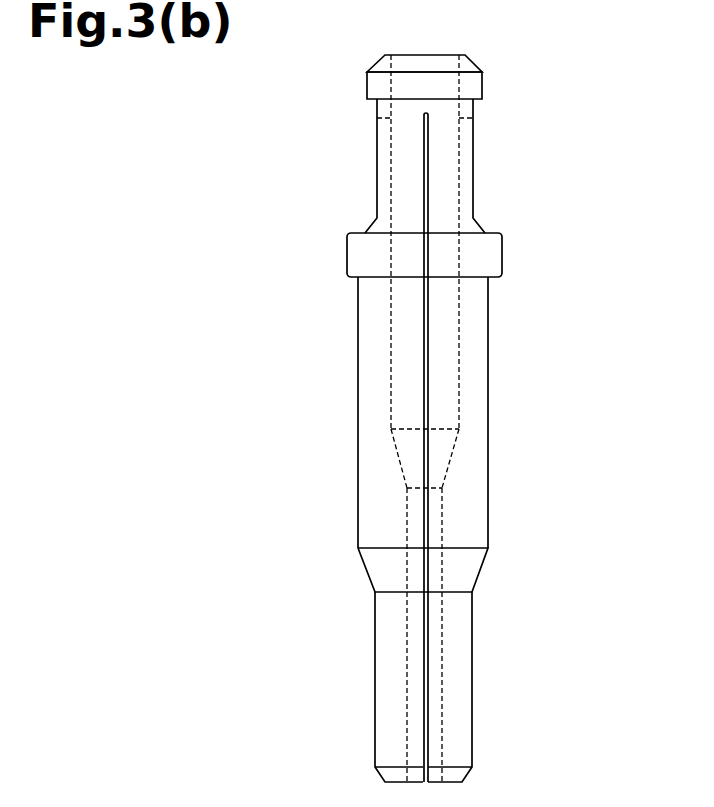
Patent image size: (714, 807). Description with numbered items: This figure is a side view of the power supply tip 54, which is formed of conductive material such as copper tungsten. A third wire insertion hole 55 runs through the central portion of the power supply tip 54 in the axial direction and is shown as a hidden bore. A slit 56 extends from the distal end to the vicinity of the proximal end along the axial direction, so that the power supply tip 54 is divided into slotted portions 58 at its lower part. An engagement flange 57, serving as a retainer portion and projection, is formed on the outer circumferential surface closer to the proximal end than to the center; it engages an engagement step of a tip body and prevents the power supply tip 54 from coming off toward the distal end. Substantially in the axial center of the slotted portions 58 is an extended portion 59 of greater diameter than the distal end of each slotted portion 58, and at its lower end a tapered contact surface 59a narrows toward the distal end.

The power supply tip 54 is at (538, 95).
The third wire insertion hole 55 is at (458, 143).
The slit 56 is at (425, 350).
The engagement flange 57 is at (499, 252).
The slotted portion 58 is at (380, 609).
The extended portion 59 is at (488, 437).
The tapered contact surface 59a is at (481, 569).